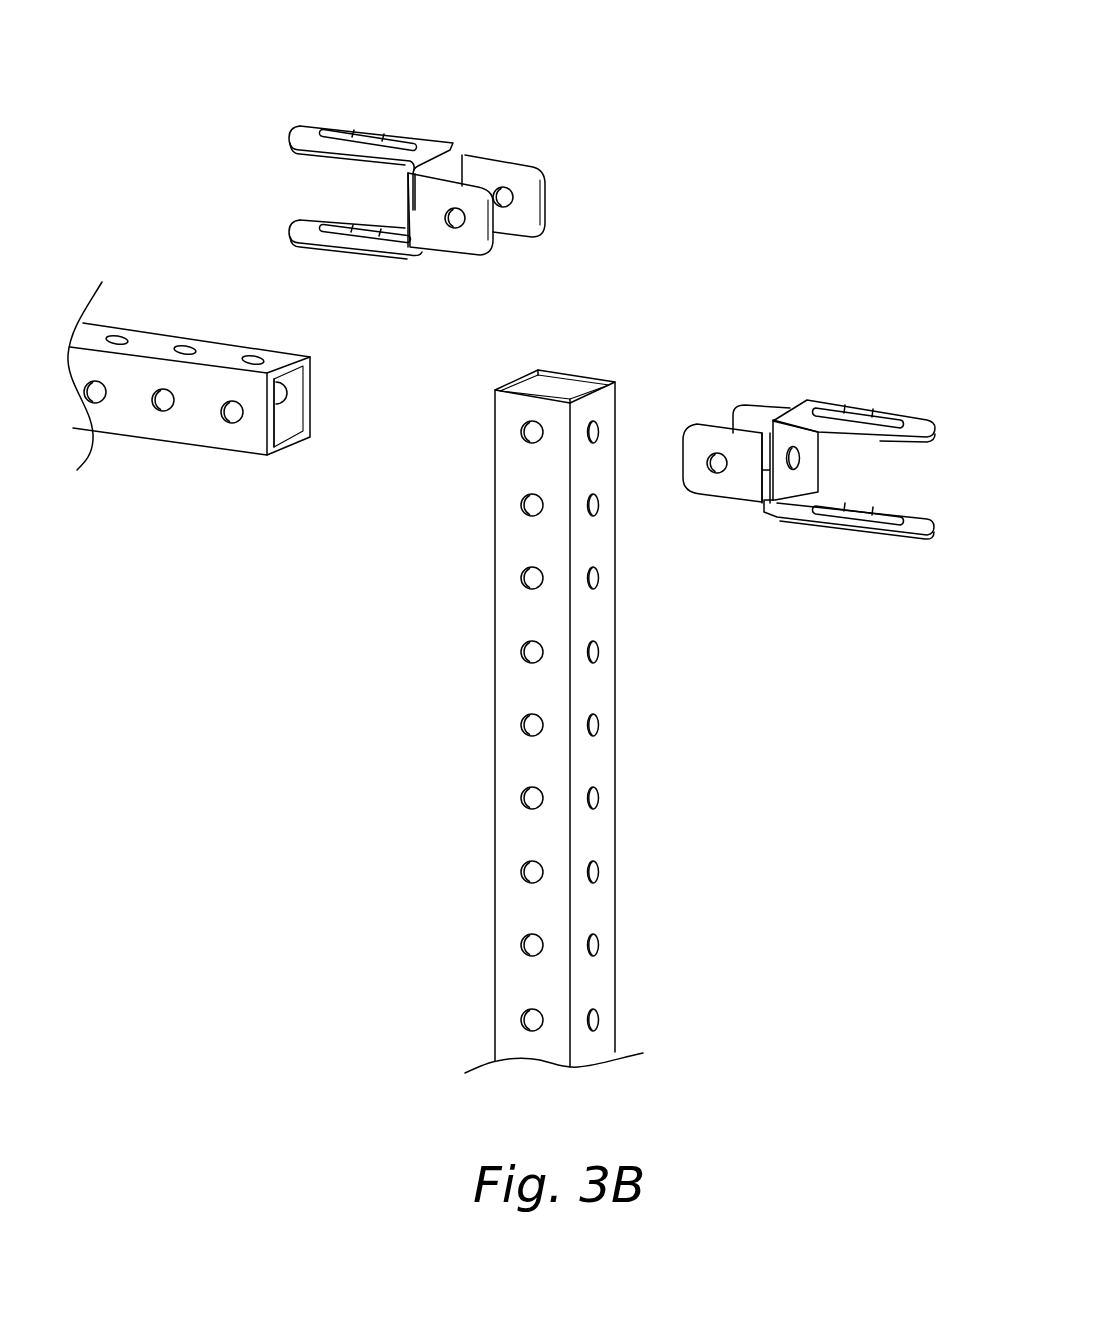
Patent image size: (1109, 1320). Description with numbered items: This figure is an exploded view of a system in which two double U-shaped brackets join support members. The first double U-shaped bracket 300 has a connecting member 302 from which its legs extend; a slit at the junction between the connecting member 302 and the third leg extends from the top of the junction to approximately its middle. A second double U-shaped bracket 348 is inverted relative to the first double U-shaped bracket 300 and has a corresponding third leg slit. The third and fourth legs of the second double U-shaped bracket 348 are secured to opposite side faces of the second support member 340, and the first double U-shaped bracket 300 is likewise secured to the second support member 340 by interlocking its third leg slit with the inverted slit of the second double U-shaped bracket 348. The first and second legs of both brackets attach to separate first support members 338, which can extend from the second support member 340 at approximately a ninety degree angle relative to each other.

The double U-shaped bracket 300 is at (816, 457).
The connecting member 302 is at (820, 455).
The first support member 338 is at (287, 448).
The second support member 340 is at (614, 719).
The second double U-shaped bracket 348 is at (439, 155).